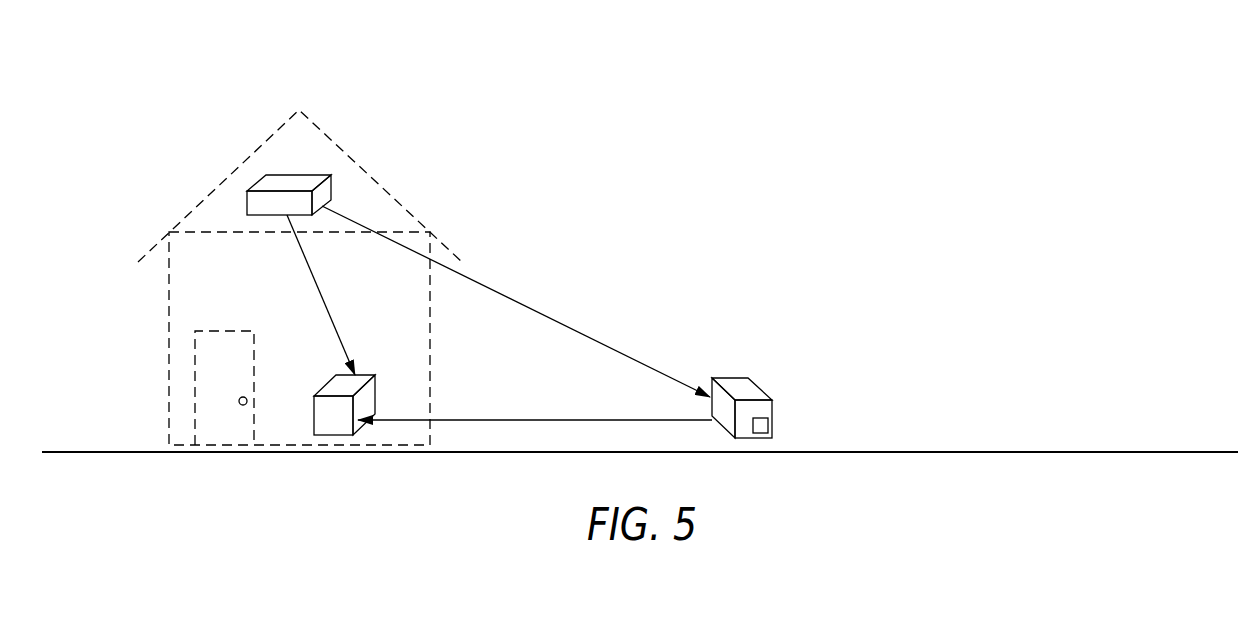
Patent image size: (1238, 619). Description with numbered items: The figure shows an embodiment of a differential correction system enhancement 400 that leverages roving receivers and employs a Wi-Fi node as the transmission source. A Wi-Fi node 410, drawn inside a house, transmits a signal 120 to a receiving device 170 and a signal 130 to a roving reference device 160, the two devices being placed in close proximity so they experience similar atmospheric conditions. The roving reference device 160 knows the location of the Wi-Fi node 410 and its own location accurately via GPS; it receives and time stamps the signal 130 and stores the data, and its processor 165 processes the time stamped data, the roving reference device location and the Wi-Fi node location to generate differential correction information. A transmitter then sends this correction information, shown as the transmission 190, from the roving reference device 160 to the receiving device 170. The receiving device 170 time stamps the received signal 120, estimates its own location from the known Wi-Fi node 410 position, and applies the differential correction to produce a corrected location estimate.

The differential correction system enhancement 400 is at (942, 153).
The Wi-Fi node 410 is at (296, 174).
The signal 120 is at (333, 323).
The signal 130 is at (582, 332).
The transmitting the differential correction information 190 is at (522, 420).
The receiving device (RD) 170 is at (337, 387).
The roving reference device (RRD) 160 is at (743, 383).
The processor 165 is at (760, 433).